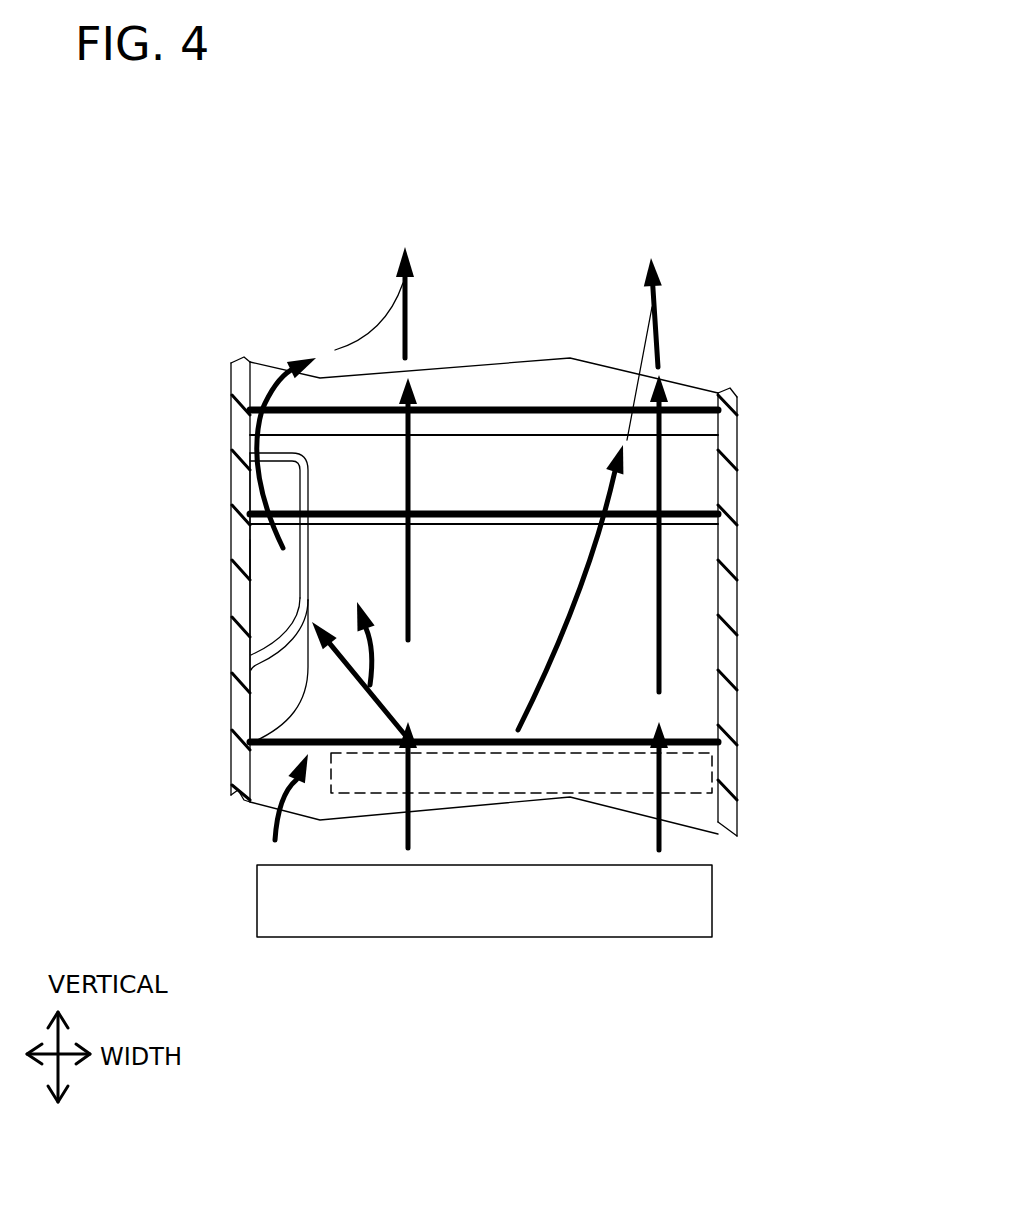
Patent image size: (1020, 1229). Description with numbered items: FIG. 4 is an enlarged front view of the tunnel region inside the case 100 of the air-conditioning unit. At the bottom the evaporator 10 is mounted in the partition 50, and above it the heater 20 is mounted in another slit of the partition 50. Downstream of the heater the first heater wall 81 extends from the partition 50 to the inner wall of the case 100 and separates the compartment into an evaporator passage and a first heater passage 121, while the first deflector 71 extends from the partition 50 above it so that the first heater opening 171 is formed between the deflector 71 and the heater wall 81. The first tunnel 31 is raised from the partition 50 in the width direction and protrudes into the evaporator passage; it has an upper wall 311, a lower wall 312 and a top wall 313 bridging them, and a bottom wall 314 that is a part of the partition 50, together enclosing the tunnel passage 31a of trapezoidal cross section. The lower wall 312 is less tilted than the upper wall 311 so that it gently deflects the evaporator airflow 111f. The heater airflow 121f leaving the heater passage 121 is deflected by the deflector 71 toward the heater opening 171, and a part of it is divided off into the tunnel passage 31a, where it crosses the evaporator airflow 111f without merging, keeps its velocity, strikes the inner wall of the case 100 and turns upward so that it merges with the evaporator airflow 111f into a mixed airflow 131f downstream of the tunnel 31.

The evaporator 10 is at (495, 940).
The heater 20 is at (682, 795).
The first tunnel 31 is at (201, 534).
The tunnel passage 31a is at (256, 557).
The upper wall 311 is at (252, 450).
The lower wall 312 is at (285, 677).
The top wall 313 is at (300, 558).
The bottom wall 314 is at (156, 598).
The partition 50 is at (248, 588).
The first deflector 71 is at (720, 477).
The first heater wall 81 is at (720, 763).
The case 100 is at (738, 540).
The first heater passage 121 is at (600, 672).
The first heater opening 171 is at (610, 603).
The evaporator airflow 111f is at (665, 403).
The heater airflow 121f is at (260, 398).
The mixed airflow 131f is at (397, 286).